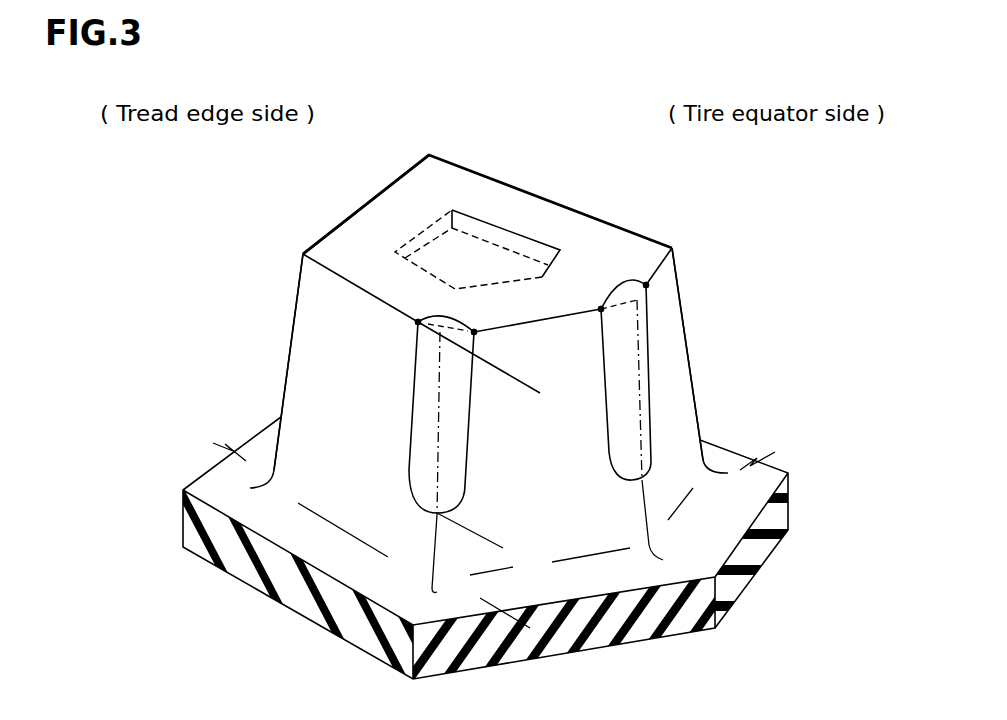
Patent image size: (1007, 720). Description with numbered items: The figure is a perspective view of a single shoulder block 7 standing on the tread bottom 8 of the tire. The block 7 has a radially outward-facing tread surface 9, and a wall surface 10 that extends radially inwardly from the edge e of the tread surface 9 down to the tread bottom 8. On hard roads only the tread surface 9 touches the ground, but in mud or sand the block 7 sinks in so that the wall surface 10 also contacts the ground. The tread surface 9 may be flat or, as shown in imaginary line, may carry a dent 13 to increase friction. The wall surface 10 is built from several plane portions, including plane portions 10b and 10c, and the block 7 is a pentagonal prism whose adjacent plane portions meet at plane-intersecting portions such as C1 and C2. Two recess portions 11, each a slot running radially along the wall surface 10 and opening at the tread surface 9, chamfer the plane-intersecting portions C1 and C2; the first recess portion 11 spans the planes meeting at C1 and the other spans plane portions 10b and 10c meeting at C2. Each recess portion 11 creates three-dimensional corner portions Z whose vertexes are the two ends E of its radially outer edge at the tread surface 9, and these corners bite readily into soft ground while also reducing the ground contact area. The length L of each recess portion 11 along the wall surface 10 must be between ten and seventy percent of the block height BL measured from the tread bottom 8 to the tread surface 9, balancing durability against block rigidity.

The block 7 is at (455, 138).
The tread bottom 8 is at (298, 532).
The tread surface 9 is at (490, 205).
The wall surface 10 is at (320, 345).
The plane portion 10b is at (574, 520).
The plane portion 10c is at (677, 377).
The recess portion 11 is at (430, 460).
The dent 13 is at (448, 250).
The edge e is at (353, 287).
The end E is at (417, 325).
The corner portion Z is at (416, 318).
The length of recess portion L is at (497, 372).
The height of block BL is at (537, 396).
The plane-intersecting portion C1 is at (433, 525).
The plane-intersecting portion C2 is at (650, 505).